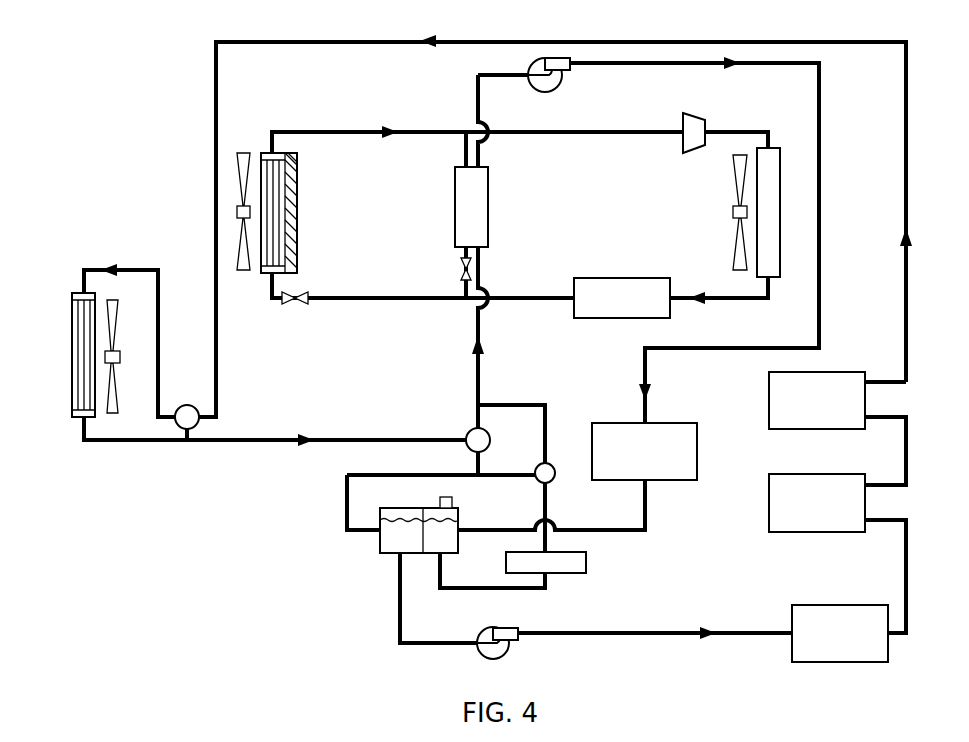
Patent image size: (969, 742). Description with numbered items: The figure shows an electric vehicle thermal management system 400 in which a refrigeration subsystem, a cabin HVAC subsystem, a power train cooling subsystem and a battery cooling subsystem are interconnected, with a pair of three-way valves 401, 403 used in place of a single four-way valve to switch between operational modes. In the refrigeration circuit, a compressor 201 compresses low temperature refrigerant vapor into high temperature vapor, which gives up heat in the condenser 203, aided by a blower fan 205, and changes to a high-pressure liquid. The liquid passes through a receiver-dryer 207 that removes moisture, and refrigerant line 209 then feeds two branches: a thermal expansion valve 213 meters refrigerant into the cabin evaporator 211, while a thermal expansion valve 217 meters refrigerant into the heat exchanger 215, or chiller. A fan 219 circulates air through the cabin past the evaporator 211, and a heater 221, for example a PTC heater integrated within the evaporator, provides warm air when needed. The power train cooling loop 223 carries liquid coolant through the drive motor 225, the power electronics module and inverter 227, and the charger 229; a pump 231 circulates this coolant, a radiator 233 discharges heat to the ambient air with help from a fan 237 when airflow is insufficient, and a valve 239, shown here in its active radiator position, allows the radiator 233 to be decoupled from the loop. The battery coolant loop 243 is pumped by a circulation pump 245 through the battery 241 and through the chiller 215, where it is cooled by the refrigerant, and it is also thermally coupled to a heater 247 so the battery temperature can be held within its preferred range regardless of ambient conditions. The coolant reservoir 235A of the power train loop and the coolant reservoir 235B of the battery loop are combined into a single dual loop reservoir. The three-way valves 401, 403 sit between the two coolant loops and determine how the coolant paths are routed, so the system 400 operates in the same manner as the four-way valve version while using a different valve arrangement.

The compressor 201 is at (698, 120).
The condenser 203 is at (775, 156).
The blower fan 205 is at (735, 160).
The receiver-dryer 207 is at (661, 278).
The refrigerant line 209 is at (507, 296).
The cabin evaporator 211 is at (273, 222).
The thermal expansion valve 213 is at (303, 302).
The heat exchanger 215 is at (478, 200).
The thermal expansion valve 217 is at (460, 274).
The fan 219 is at (238, 258).
The heater 221 is at (290, 165).
The power train cooling loop 223 is at (482, 39).
The drive motor 225 is at (790, 474).
The power electronics module and inverter 227 is at (830, 372).
The charger 229 is at (808, 605).
The pump 231 is at (486, 628).
The radiator 233 is at (78, 378).
The coolant reservoir 235A is at (385, 535).
The coolant reservoir 235B is at (450, 545).
The fan 237 is at (113, 304).
The valve 239 is at (191, 406).
The battery 241 is at (672, 423).
The coolant loop 243 is at (480, 385).
The circulation pump 245 is at (556, 86).
The heater 247 is at (568, 573).
The system 400 is at (250, 545).
The three-way valve 401 is at (470, 432).
The three-way valve 403 is at (557, 478).